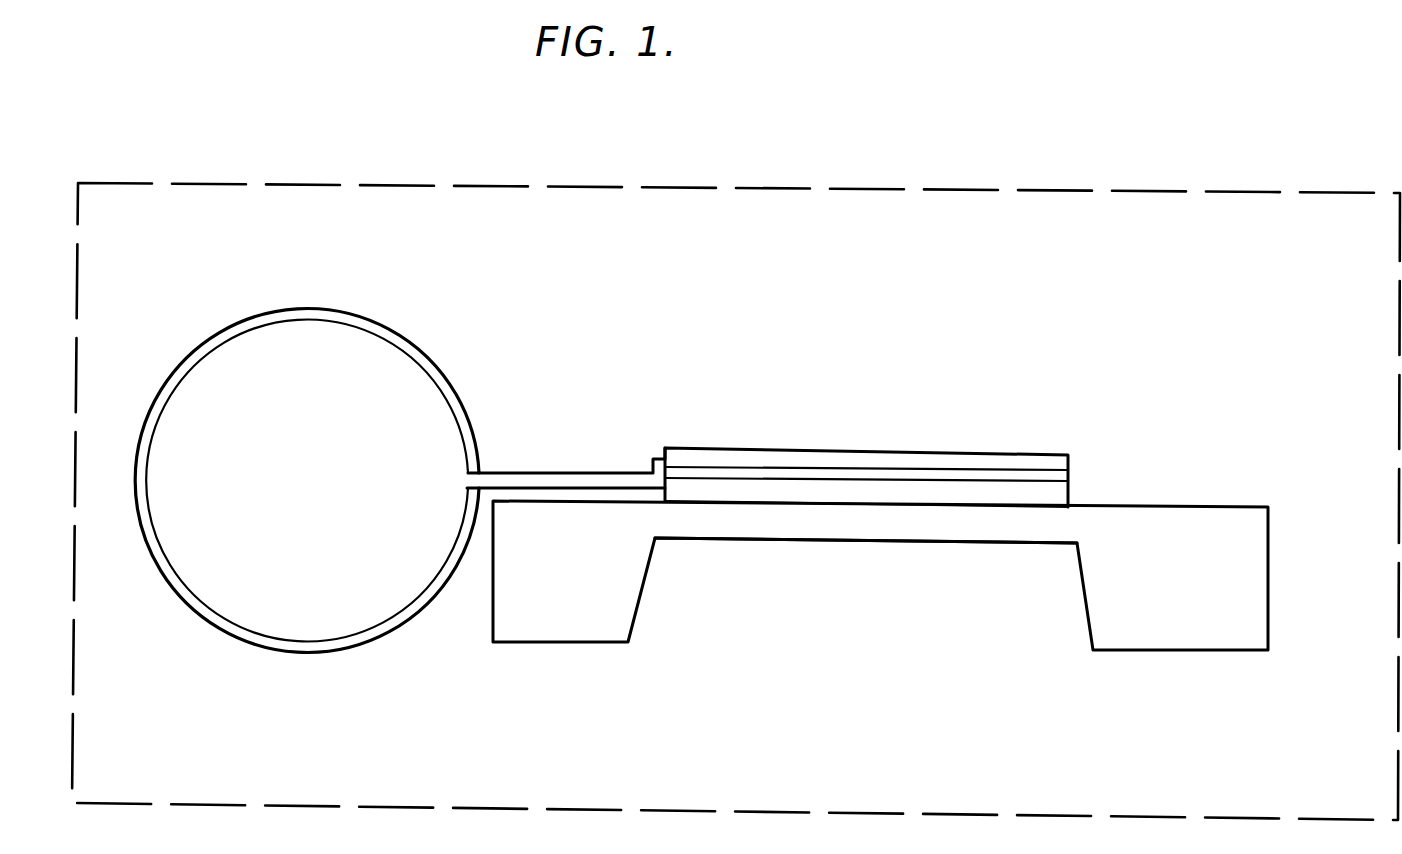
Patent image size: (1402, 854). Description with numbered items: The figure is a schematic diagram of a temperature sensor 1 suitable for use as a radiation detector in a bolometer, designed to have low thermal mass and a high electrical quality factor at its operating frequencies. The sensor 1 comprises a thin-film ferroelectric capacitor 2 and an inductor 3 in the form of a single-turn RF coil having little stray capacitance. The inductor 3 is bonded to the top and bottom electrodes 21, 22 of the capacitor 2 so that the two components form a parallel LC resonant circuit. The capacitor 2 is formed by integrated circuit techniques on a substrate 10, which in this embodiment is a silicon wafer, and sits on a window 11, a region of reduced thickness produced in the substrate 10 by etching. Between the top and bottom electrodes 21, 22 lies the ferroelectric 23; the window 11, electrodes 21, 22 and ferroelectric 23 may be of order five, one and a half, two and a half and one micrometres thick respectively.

The temperature sensor 1 is at (931, 190).
The thin-film ferroelectric capacitor 2 is at (871, 444).
The inductor 3 is at (260, 311).
The substrate 10 is at (1155, 637).
The window 11 is at (908, 534).
The top electrode 21 is at (1071, 457).
The bottom electrode 22 is at (764, 497).
The ferroelectric 23 is at (1069, 480).